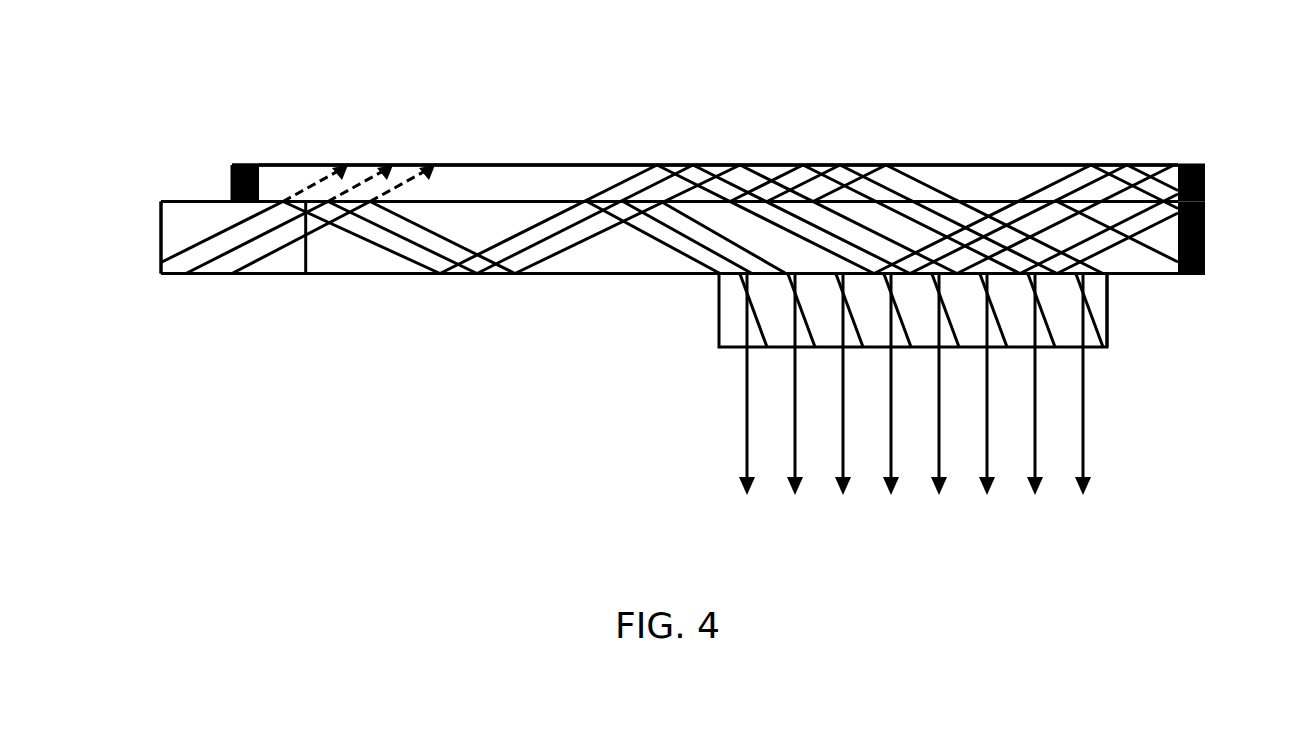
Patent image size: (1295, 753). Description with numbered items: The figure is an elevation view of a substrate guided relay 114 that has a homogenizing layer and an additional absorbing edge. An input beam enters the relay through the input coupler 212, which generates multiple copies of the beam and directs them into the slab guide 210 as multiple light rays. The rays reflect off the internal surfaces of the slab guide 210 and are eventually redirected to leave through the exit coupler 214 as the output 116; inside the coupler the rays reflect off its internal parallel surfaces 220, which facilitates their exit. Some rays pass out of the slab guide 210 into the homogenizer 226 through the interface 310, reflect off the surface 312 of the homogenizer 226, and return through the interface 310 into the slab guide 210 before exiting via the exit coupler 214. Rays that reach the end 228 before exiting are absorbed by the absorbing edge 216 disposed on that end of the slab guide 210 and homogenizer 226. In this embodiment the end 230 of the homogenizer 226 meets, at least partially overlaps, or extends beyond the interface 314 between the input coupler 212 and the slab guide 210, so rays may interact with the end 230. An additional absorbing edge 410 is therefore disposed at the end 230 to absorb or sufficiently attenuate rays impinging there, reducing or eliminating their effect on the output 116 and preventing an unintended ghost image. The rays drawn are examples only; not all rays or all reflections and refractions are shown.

The substrate guided relay 114 is at (1124, 76).
The output 116 is at (1094, 432).
The slab guide 210 is at (1130, 277).
The input coupler 212 is at (160, 223).
The exit coupler 214 is at (719, 323).
The absorbing edge 216 is at (1205, 237).
The internal parallel surfaces 220 is at (1117, 308).
The homogenizer 226 is at (583, 165).
The end 228 is at (1205, 175).
The end of homogenizer 230 is at (260, 188).
The interface 310 is at (500, 201).
The surface 312 is at (512, 165).
The interface 314 is at (307, 250).
The absorbing edge 410 is at (232, 192).